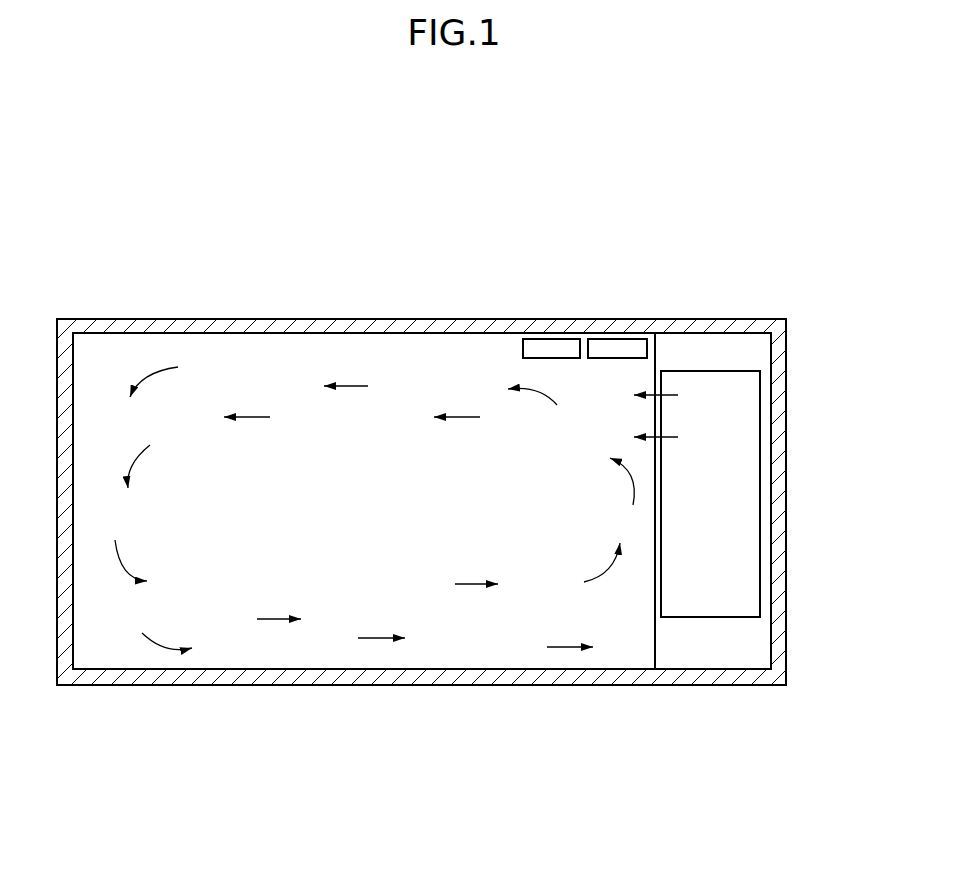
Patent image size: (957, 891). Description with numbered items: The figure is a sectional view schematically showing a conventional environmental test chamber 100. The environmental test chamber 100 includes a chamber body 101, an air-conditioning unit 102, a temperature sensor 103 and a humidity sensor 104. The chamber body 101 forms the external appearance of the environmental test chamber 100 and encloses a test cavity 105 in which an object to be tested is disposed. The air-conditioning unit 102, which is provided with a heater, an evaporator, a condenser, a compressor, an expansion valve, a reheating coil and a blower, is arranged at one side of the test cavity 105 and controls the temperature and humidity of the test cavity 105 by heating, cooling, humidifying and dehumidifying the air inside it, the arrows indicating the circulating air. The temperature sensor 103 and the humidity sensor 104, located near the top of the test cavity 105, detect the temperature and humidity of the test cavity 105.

The environmental test chamber 100 is at (146, 260).
The chamber body 101 is at (388, 678).
The air-conditioning unit 102 is at (738, 472).
The temperature sensor 103 is at (550, 347).
The humidity sensor 104 is at (612, 347).
The test cavity 105 is at (401, 430).